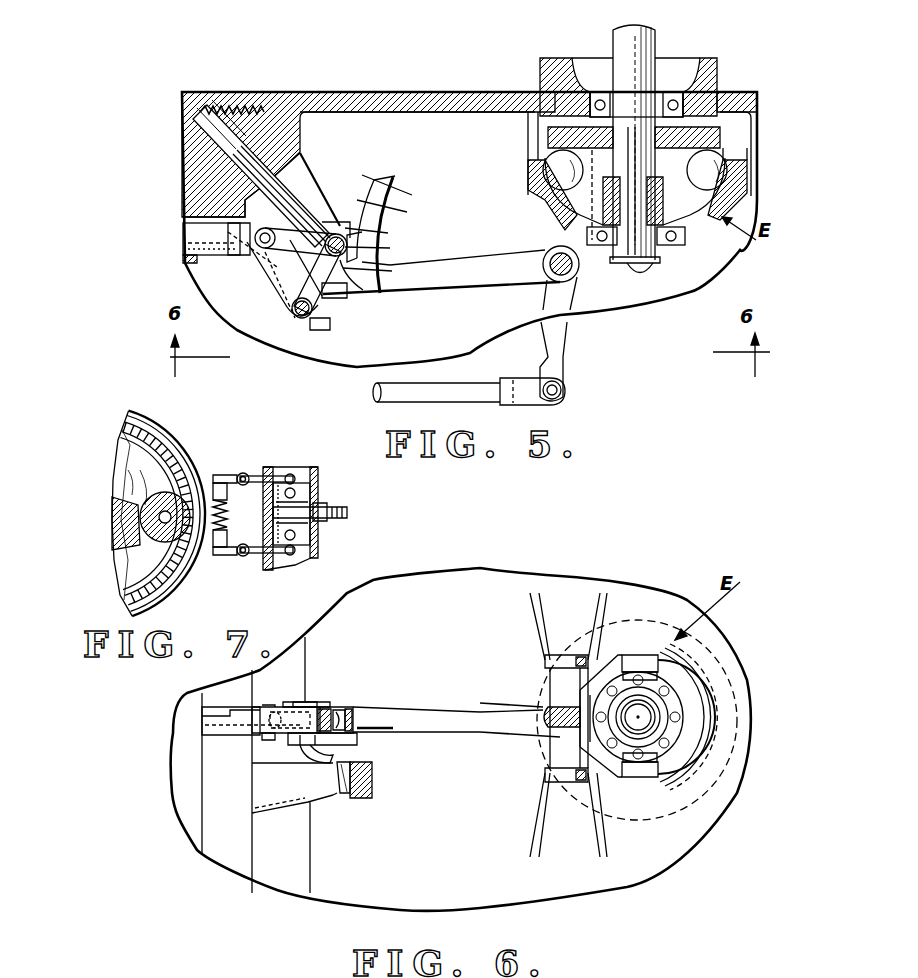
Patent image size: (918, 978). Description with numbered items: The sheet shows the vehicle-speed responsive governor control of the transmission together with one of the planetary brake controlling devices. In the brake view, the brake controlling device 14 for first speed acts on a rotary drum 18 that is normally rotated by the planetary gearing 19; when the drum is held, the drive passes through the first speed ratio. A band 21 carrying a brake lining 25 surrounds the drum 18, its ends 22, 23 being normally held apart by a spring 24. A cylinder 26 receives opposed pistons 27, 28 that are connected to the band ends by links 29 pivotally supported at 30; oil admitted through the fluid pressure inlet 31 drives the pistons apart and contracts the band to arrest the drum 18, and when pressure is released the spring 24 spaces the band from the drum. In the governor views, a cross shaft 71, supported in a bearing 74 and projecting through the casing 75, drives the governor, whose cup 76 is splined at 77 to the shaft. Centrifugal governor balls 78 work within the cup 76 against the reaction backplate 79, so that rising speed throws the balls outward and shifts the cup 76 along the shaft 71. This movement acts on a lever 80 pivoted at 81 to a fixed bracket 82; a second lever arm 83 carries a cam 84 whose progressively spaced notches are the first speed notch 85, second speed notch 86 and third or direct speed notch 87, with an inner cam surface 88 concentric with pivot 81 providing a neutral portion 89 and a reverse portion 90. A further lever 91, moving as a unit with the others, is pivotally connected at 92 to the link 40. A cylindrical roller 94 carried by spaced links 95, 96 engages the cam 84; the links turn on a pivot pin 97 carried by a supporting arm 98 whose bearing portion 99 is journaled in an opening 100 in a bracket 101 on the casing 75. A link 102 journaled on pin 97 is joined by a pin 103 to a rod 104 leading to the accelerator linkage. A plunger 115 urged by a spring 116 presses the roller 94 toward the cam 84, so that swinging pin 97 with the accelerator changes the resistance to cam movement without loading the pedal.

In FIG. 7, the brake controlling device 14 is at (176, 424).
In FIG. 7, the drum 18 is at (180, 468).
In FIG. 7, the planetary gearing 19 is at (158, 498).
In FIG. 7, the band 21 is at (132, 415).
In FIG. 7, the band end 22 is at (216, 482).
In FIG. 7, the band end 23 is at (220, 555).
In FIG. 7, the spring 24 is at (228, 513).
In FIG. 7, the brake lining 25 is at (262, 470).
In FIG. 7, the cylinder 26 is at (315, 470).
In FIG. 7, the piston 27 is at (312, 500).
In FIG. 7, the piston 28 is at (318, 540).
In FIG. 7, the link 29 is at (264, 474).
In FIG. 7, the pivot 30 is at (244, 470).
In FIG. 7, the fluid pressure inlet 31 is at (330, 512).
In FIG. 5, the link 40 is at (466, 398).
In FIG. 5, the cross shaft 71 is at (613, 42).
In FIG. 6, the cross shaft 71 is at (645, 722).
In FIG. 5, the bearing 74 is at (668, 95).
In FIG. 5, the casing 75 is at (470, 92).
In FIG. 5, the cup 76 is at (733, 192).
In FIG. 6, the cup 76 is at (717, 677).
In FIG. 5, the spline 77 is at (655, 240).
In FIG. 5, the governor balls 78 is at (722, 145).
In FIG. 5, the reaction backplate 79 is at (700, 112).
In FIG. 5, the lever 80 is at (600, 263).
In FIG. 6, the lever 80 is at (617, 670).
In FIG. 5, the pivot 81 is at (550, 252).
In FIG. 5, the fixed bracket 82 is at (538, 135).
In FIG. 6, the fixed bracket 82 is at (538, 640).
In FIG. 5, the second lever arm 83 is at (468, 268).
In FIG. 6, the second lever arm 83 is at (448, 718).
In FIG. 5, the cam 84 is at (385, 288).
In FIG. 6, the cam 84 is at (375, 713).
In FIG. 5, the first speed notch 85 is at (400, 228).
In FIG. 5, the second speed notch 86 is at (402, 248).
In FIG. 5, the third or direct speed notch 87 is at (350, 290).
In FIG. 5, the cam surface 88 is at (390, 180).
In FIG. 5, the neutral portion 89 is at (352, 214).
In FIG. 5, the reverse portion 90 is at (372, 182).
In FIG. 5, the lever 91 is at (565, 343).
In FIG. 6, the lever 91 is at (563, 698).
In FIG. 5, the pivotal connection 92 is at (562, 391).
In FIG. 5, the roller 94 is at (328, 226).
In FIG. 6, the roller 94 is at (348, 710).
In FIG. 6, the link 95 is at (333, 706).
In FIG. 5, the link 96 is at (330, 324).
In FIG. 6, the link 96 is at (357, 740).
In FIG. 5, the pivot pin 97 is at (305, 318).
In FIG. 6, the pivot pin 97 is at (310, 700).
In FIG. 6, the supporting arm 98 is at (305, 765).
In FIG. 6, the bearing portion 99 is at (372, 795).
In FIG. 6, the opening 100 is at (348, 798).
In FIG. 5, the bracket 101 is at (312, 158).
In FIG. 6, the bracket 101 is at (372, 778).
In FIG. 5, the link 102 is at (268, 262).
In FIG. 6, the link 102 is at (292, 704).
In FIG. 5, the pin 103 is at (240, 245).
In FIG. 6, the pin 103 is at (258, 705).
In FIG. 5, the rod 104 is at (188, 232).
In FIG. 6, the rod 104 is at (242, 735).
In FIG. 5, the plunger 115 is at (308, 190).
In FIG. 5, the spring 116 is at (222, 112).